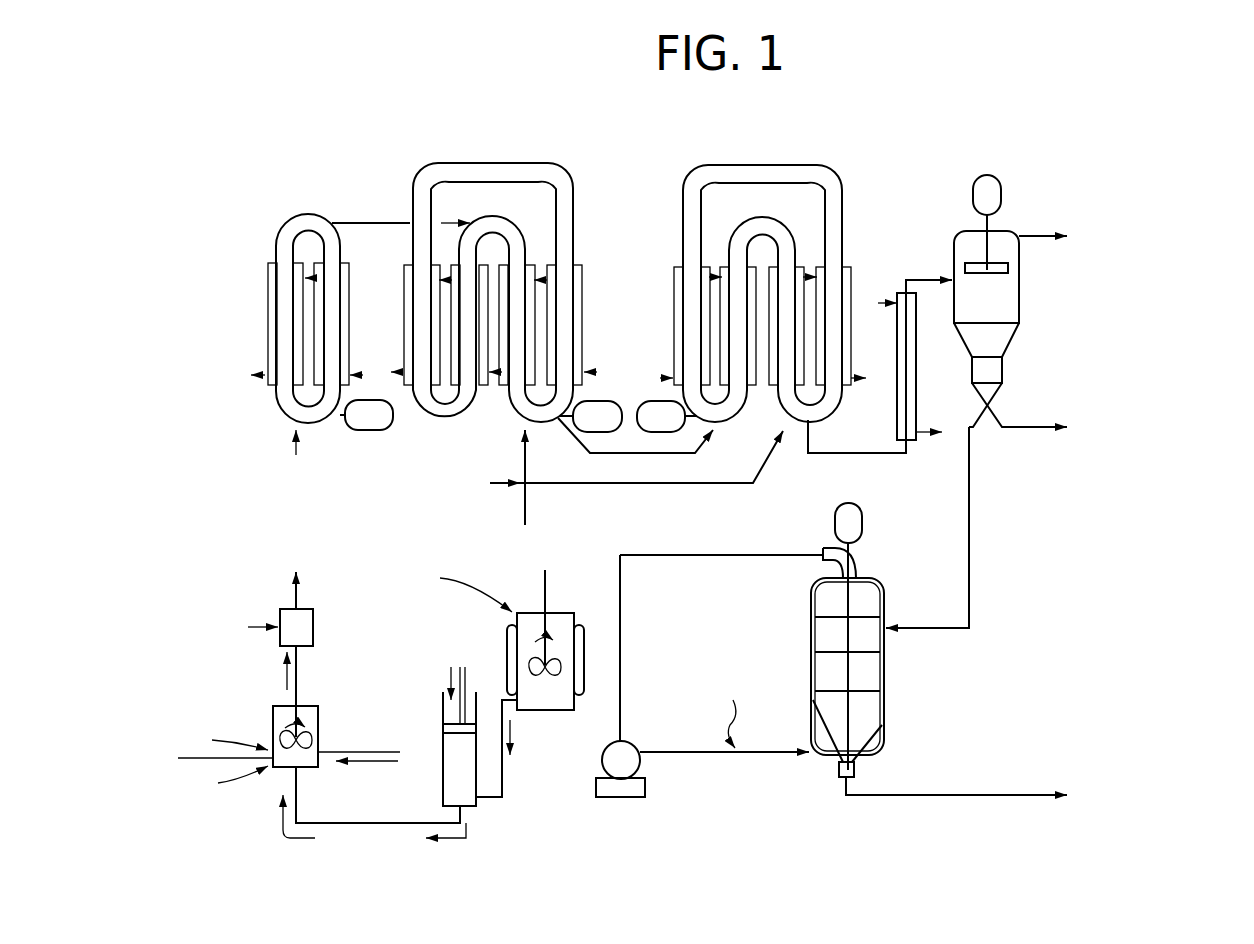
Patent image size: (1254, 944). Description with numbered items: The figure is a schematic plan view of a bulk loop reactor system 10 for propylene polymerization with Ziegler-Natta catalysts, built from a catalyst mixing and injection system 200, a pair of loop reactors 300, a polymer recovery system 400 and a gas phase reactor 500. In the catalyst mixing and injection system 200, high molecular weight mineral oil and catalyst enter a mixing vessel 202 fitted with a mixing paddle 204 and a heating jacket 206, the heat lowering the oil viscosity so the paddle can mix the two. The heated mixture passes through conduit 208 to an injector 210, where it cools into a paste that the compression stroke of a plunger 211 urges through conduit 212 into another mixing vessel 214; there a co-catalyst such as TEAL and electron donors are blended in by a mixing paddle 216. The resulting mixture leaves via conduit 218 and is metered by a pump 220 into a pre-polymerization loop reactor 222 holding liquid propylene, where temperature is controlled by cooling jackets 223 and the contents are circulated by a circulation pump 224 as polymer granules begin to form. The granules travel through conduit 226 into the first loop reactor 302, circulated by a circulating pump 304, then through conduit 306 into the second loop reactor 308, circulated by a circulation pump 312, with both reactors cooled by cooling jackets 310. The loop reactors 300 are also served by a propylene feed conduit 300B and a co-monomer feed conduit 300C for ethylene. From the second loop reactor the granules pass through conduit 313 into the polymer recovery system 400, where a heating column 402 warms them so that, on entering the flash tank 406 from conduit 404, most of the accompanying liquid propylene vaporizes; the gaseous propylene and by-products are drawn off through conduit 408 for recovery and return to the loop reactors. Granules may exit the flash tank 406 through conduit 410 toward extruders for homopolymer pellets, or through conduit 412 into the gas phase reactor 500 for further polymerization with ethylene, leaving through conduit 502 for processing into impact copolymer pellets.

The bulk loop reactor system 10 is at (497, 152).
The catalyst mixing and injection system 200 is at (510, 820).
The mixing vessel 202 is at (557, 612).
The mixing paddle 204 is at (540, 598).
The heating jacket 206 is at (507, 632).
The conduit 208 is at (505, 772).
The injector 210 is at (443, 745).
The plunger 211 is at (472, 657).
The conduit 212 is at (382, 825).
The mixing vessel 214 is at (320, 717).
The mixing paddle 216 is at (290, 710).
The conduit 218 is at (300, 660).
The pump 220 is at (298, 610).
The pre-polymerization loop reactor 222 is at (278, 410).
The cooling jackets 223 is at (268, 328).
The circulation pump 224 is at (372, 432).
The conduit 226 is at (360, 222).
The loop reactors 300 is at (809, 150).
The propylene feed conduit 300B is at (524, 515).
The co-monomer feed conduit 300C is at (498, 480).
The first loop reactor 302 is at (574, 220).
The circulating pump 304 is at (598, 398).
The conduit 306 is at (623, 455).
The second loop reactor 308 is at (690, 172).
The cooling jackets 310 is at (674, 330).
The circulation pump 312 is at (633, 442).
The conduit 313 is at (855, 455).
The polymer recovery system 400 is at (1027, 196).
The heating column 402 is at (916, 327).
The conduit 404 is at (910, 275).
The flash tank 406 is at (1019, 282).
The conduit 408 is at (1025, 233).
The conduit 410 is at (995, 415).
The conduit 412 is at (975, 498).
The gas phase reactor 500 is at (884, 725).
The conduit 502 is at (900, 795).